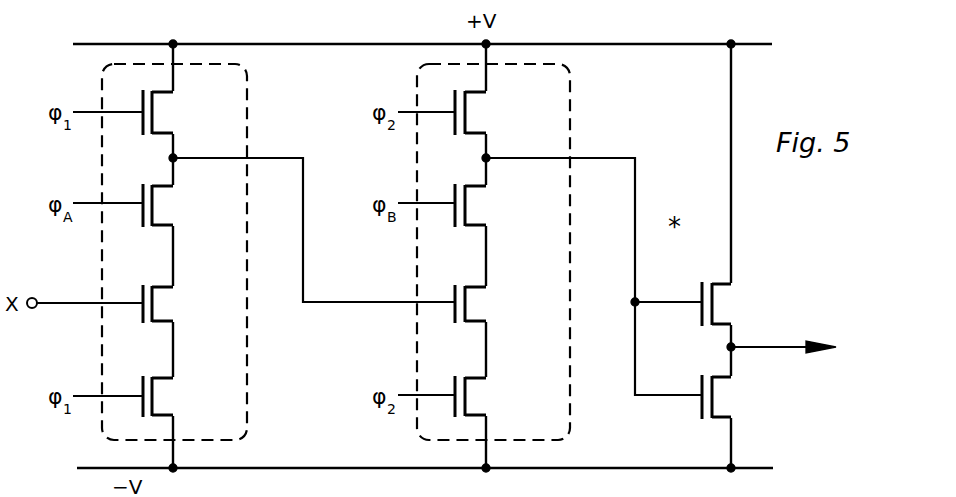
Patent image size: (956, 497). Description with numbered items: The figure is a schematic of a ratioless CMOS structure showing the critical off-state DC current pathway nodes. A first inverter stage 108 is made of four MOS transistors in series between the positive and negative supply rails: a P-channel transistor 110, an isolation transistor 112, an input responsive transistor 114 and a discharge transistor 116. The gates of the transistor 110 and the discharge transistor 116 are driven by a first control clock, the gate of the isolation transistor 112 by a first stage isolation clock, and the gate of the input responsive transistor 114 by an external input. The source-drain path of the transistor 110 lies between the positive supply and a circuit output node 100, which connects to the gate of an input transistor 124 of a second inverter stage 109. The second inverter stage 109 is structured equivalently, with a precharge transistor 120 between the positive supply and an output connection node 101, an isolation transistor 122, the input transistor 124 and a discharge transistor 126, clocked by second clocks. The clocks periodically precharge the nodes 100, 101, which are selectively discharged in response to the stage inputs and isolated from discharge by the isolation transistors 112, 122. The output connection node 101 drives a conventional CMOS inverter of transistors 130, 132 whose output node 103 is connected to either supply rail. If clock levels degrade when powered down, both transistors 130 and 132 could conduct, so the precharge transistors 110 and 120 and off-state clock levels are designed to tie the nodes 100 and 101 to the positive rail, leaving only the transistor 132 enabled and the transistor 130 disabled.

The circuit output node 100 is at (178, 153).
The output connection node 101 is at (492, 153).
The node 103 is at (739, 344).
The first inverter stage 108 is at (249, 103).
The second inverter stage 109 is at (572, 108).
The P-channel transistor 110 is at (174, 103).
The isolation transistor 112 is at (174, 220).
The input responsive transistor 114 is at (174, 320).
The discharge transistor 116 is at (174, 412).
The precharge transistor 120 is at (488, 104).
The isolation transistor 122 is at (490, 188).
The input transistor 124 is at (490, 288).
The discharge transistor 126 is at (490, 384).
The transistor 130 is at (736, 313).
The transistor 132 is at (734, 410).